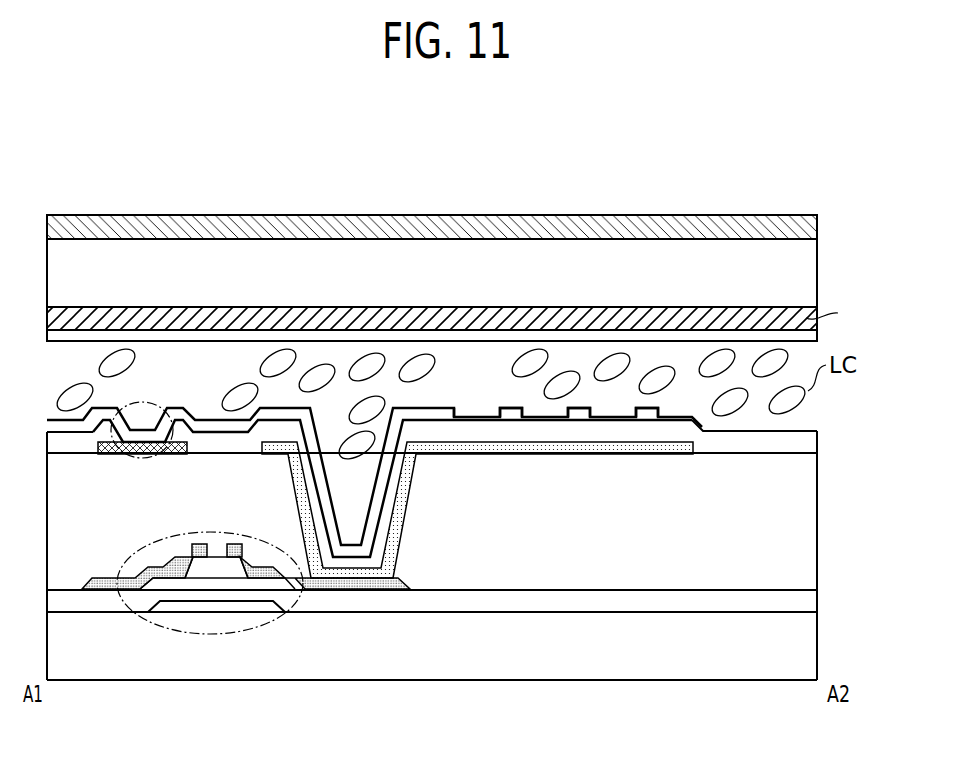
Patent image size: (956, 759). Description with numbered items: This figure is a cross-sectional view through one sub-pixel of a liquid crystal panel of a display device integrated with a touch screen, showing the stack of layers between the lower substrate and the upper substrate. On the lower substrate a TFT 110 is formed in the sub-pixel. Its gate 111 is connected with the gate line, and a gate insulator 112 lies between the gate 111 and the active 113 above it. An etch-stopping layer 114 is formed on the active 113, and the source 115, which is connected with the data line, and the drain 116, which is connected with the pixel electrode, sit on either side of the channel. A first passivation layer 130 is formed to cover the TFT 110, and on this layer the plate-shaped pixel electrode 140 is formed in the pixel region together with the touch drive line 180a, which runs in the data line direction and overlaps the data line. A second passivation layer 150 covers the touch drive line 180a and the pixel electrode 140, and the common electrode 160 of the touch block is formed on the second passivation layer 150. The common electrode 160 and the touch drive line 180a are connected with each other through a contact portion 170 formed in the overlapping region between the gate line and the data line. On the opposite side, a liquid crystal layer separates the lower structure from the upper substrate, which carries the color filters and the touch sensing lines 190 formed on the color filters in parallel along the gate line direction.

The TFT 110 is at (195, 635).
The gate 111 is at (247, 605).
The gate insulator 112 is at (806, 605).
The active 113 is at (190, 552).
The etch-stopping layer 114 is at (235, 548).
The source 115 is at (150, 577).
The drain 116 is at (396, 586).
The first passivation layer 130 is at (806, 520).
The pixel electrode 140 is at (601, 447).
The second passivation layer 150 is at (806, 443).
The common electrode 160 is at (512, 407).
The contact portion 170 is at (138, 405).
The touch drive line 180a is at (174, 440).
The touch sensing lines 190 is at (722, 229).